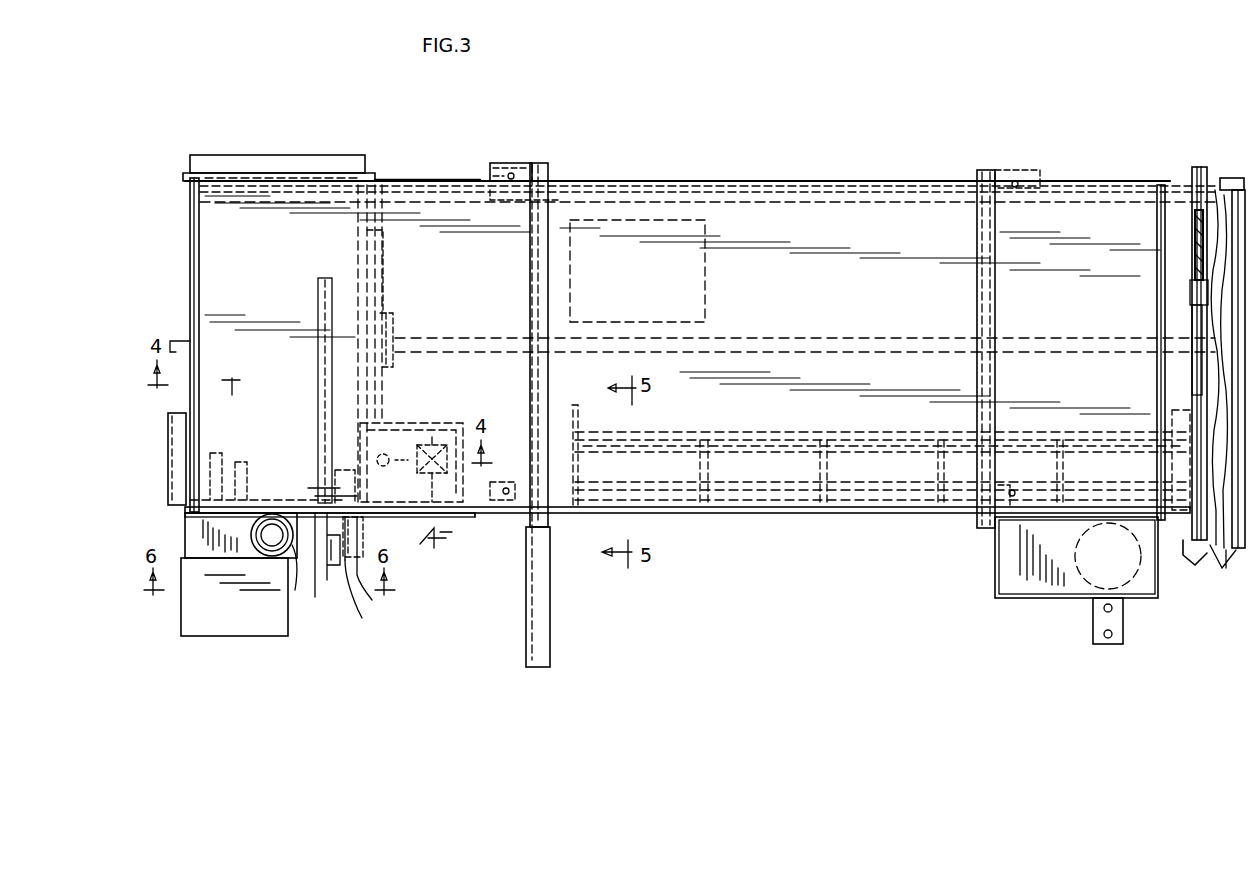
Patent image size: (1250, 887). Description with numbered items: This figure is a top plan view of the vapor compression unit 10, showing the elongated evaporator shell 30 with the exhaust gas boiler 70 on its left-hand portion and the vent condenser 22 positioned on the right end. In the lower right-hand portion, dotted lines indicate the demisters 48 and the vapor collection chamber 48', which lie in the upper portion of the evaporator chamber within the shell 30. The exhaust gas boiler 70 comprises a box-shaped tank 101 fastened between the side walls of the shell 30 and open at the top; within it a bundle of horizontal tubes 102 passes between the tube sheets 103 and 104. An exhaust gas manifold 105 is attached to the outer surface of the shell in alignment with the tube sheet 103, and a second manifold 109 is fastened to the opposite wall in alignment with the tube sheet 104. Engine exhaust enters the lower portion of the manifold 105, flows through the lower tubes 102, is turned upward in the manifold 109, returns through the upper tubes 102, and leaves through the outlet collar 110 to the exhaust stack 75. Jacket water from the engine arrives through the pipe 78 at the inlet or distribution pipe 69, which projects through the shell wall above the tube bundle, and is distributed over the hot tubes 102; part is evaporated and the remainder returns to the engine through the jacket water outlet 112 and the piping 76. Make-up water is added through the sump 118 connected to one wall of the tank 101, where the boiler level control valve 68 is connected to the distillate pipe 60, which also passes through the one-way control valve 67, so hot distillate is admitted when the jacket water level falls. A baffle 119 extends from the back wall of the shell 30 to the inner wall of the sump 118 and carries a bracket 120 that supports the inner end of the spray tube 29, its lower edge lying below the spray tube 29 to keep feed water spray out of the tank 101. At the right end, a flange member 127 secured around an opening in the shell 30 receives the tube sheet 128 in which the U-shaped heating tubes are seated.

The vapor compression unit 10 is at (795, 518).
The vent condenser 22 is at (1234, 570).
The spray tube 29 is at (916, 338).
The shell 30 is at (875, 208).
The demisters 48 is at (884, 515).
The vapor collection chamber 48' is at (1068, 580).
The distillate pipe 60 is at (436, 548).
The one-way control valve 67 is at (452, 535).
The boiler level control valve 68 is at (433, 440).
The inlet or distribution pipe 69 is at (316, 300).
The exhaust gas boiler 70 is at (208, 262).
The exhaust stack 75 is at (308, 573).
The piping 76 is at (373, 566).
The pipe 78 is at (360, 598).
The tank 101 is at (375, 205).
The tubes 102 is at (222, 455).
The tube sheet 103 is at (366, 520).
The tube sheet 104 is at (345, 180).
The exhaust gas manifold 105 is at (215, 550).
The second manifold 109 is at (312, 168).
The outlet collar 110 is at (300, 496).
The jacket water outlet 112 is at (348, 470).
The sump 118 is at (449, 424).
The baffle 119 is at (386, 270).
The bracket 120 is at (395, 327).
The flange member 127 is at (1186, 558).
The tube sheet 128 is at (1203, 172).